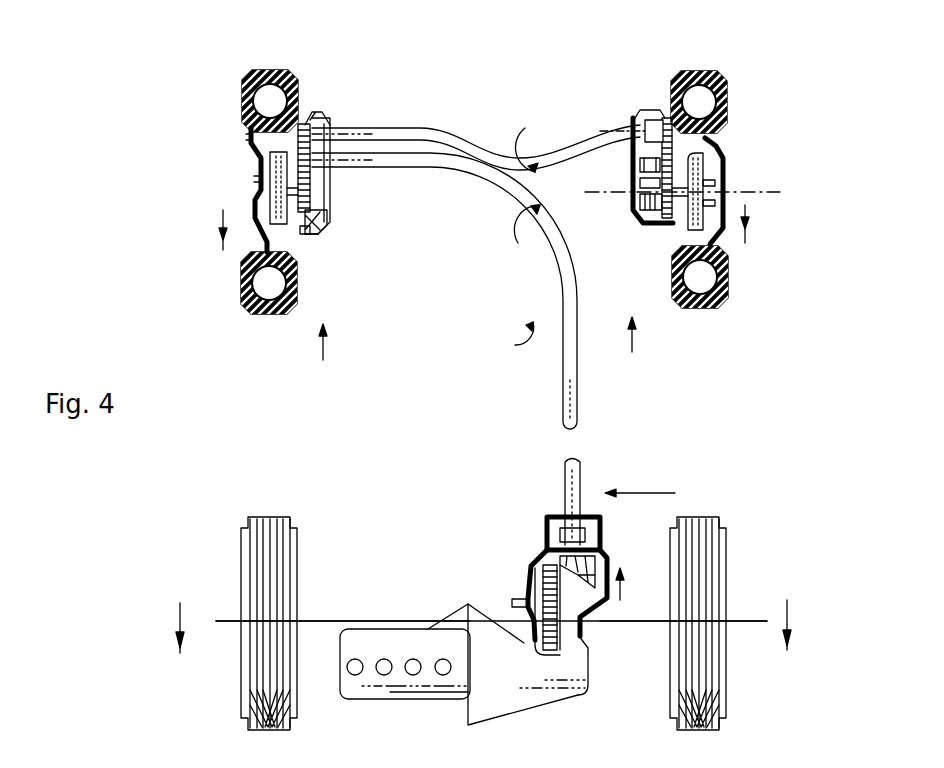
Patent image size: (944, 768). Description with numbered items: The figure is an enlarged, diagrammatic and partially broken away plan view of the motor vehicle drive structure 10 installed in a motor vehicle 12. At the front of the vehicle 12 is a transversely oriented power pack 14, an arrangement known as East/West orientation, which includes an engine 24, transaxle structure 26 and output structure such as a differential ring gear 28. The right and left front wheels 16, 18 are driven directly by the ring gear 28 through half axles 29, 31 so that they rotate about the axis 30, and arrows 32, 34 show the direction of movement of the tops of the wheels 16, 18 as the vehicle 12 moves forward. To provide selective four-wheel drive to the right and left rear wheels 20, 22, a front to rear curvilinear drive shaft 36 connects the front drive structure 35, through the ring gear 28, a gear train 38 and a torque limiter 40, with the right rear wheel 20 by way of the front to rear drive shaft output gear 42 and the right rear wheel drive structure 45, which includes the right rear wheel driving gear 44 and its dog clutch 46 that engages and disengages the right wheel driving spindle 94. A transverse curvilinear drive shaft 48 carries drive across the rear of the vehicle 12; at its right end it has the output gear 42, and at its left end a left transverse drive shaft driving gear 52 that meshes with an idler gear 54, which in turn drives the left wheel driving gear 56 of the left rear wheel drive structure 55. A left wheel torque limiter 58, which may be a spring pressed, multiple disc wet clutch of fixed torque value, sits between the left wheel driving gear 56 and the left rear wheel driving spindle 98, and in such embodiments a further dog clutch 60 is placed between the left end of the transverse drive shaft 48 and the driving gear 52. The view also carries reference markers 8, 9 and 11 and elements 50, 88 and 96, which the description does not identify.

The direction arrow 8 is at (637, 495).
The section line 9 is at (324, 352).
The motor vehicle drive structure 10 is at (520, 339).
The section line 11 is at (633, 345).
The motor vehicle 12 is at (235, 623).
The power pack 14 is at (403, 700).
The right front wheel 16 is at (245, 700).
The left front wheel 18 is at (727, 688).
The right rear wheel 20 is at (242, 288).
The left rear wheel 22 is at (735, 280).
The engine 24 is at (383, 700).
The transaxle structure 26 is at (543, 697).
The output differential ring gear 28 is at (558, 640).
The half axle 29 is at (350, 618).
The axis 30 is at (752, 618).
The half axle 31 is at (633, 618).
The arrow 32 is at (180, 617).
The arrow 34 is at (790, 610).
The front drive structure 35 is at (550, 530).
The front to rear curvilinear drive shaft 36 is at (562, 393).
The gear train 38 is at (543, 563).
The torque limiter 40 is at (588, 517).
The front to rear drive shaft output gear 42 is at (262, 152).
The right rear wheel driving gear 44 is at (320, 228).
The right rear wheel drive structure 45 is at (300, 222).
The dog clutch 46 is at (332, 205).
The transverse curvilinear drive shaft 48 is at (447, 132).
The cap 50 is at (315, 118).
The left transverse drive shaft driving gear 52 is at (665, 118).
The idler gear 54 is at (660, 155).
The left rear wheel drive structure 55 is at (663, 170).
The left wheel driving gear 56 is at (670, 227).
The left wheel torque limiter 58 is at (640, 197).
The dog clutch 60 is at (637, 122).
The center line 88 is at (338, 120).
The right wheel driving spindle 94 is at (288, 186).
The cap 96 is at (647, 110).
The left rear wheel driving spindle 98 is at (710, 172).